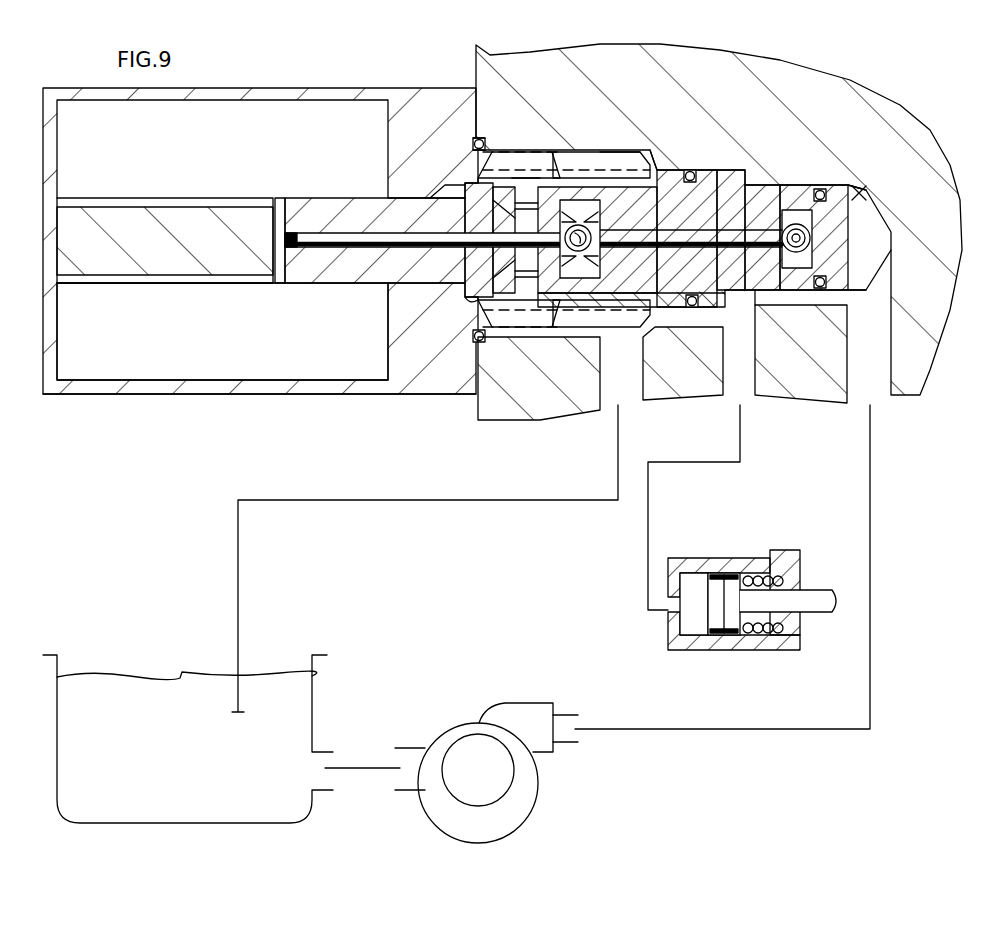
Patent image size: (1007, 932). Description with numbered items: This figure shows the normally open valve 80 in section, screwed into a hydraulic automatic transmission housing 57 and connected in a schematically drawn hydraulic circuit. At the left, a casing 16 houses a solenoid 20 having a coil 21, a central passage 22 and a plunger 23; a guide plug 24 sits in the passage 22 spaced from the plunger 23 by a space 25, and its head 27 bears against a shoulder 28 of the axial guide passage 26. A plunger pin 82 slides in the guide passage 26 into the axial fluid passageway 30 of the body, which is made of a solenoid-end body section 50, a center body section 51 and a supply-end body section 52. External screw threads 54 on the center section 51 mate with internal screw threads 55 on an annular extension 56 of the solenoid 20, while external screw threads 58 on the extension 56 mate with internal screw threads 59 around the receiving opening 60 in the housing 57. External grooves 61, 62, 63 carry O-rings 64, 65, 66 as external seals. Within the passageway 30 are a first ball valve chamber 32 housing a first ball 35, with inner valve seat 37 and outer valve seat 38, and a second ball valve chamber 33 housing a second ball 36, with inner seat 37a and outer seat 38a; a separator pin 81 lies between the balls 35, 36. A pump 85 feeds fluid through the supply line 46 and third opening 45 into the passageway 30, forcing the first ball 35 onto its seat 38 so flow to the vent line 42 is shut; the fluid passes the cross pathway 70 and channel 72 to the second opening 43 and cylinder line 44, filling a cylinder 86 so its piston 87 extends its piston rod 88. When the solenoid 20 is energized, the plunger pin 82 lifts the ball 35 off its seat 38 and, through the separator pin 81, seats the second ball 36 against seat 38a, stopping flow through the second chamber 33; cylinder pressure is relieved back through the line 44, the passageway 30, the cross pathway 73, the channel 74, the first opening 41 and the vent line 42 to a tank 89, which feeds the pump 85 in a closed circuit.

The casing 16 is at (282, 90).
The solenoid 20 is at (205, 394).
The coil 21 is at (148, 331).
The central passage 22 is at (222, 286).
The plunger 23 is at (153, 241).
The guide plug 24 is at (340, 224).
The space 25 is at (273, 198).
The axial guide passage 26 is at (430, 205).
The head 27 is at (465, 300).
The shoulder 28 is at (465, 190).
The axial linear fluid passageway 30 is at (849, 240).
The first ball valve chamber 32 is at (590, 256).
The second ball valve chamber 33 is at (848, 185).
The first ball 35 is at (608, 226).
The second ball 36 is at (808, 230).
The first inner valve seat 37 is at (602, 248).
The second inner valve seat 37a is at (780, 242).
The first outer valve seat 38 is at (583, 225).
The second outer valve seat 38a is at (825, 269).
The first opening 41 is at (635, 338).
The vent line 42 is at (618, 430).
The second opening 43 is at (757, 332).
The cylinder line 44 is at (745, 428).
The third opening 45 is at (873, 190).
The supply line 46 is at (870, 430).
The solenoid-end body section 50 is at (508, 329).
The center body section 51 is at (650, 145).
The supply-end body section 52 is at (762, 300).
The external screw threads 54 is at (533, 171).
The internal screw threads 55 is at (612, 150).
The annular extension 56 is at (522, 150).
The transmission housing 57 is at (661, 91).
The external screw threads 58 is at (533, 150).
The internal screw threads 59 is at (575, 150).
The receiving opening 60 is at (484, 142).
The external groove 61 is at (840, 298).
The external groove 62 is at (690, 170).
The external groove 63 is at (474, 140).
The O-ring 64 is at (786, 296).
The O-ring 65 is at (700, 170).
The O-ring 66 is at (474, 147).
The cross pathway 70 is at (752, 185).
The channel 72 is at (737, 172).
The cross pathway 73 is at (492, 240).
The channel 74 is at (598, 173).
The normally open valve 80 is at (464, 406).
The separator pin 81 is at (668, 240).
The plunger pin 82 is at (410, 250).
The pump 85 is at (463, 836).
The cylinder 86 is at (770, 650).
The piston 87 is at (722, 572).
The piston rod 88 is at (810, 596).
The tank or reservoir 89 is at (173, 761).